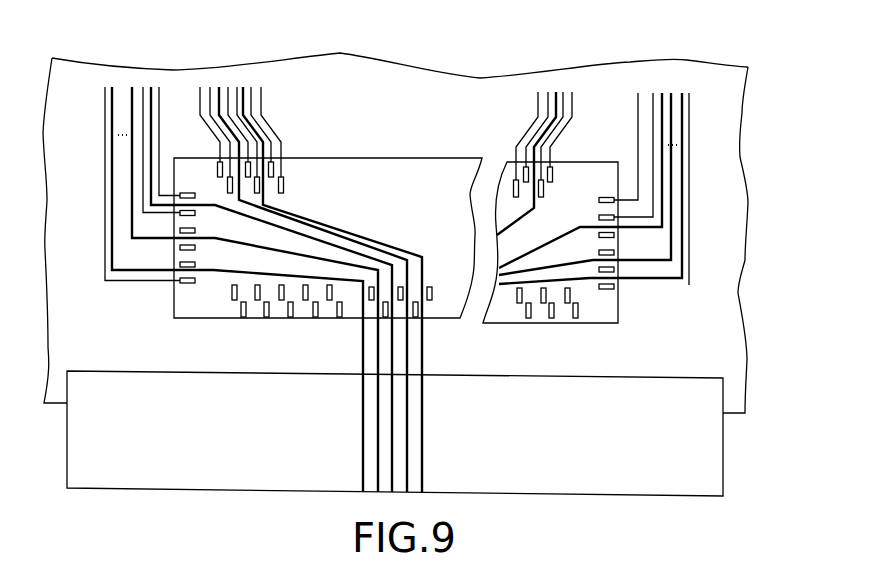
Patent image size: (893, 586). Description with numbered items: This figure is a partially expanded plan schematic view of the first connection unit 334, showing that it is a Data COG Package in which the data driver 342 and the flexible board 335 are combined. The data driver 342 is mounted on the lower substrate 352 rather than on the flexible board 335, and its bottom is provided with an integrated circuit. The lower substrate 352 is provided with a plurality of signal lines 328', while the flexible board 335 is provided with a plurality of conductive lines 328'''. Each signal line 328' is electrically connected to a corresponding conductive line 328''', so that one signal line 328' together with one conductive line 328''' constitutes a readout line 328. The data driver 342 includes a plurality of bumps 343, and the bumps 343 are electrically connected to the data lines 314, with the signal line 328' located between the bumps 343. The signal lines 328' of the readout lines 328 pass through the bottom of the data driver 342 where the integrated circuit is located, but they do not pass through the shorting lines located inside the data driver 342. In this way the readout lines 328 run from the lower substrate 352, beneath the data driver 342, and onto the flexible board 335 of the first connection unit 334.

The lower substrate 352 is at (60, 95).
The readout line 328 is at (293, 316).
The signal line 328' is at (269, 270).
The conductive line 328''' is at (315, 434).
The data line 314 is at (270, 126).
The bump 343 is at (281, 187).
The data driver 342 is at (603, 313).
The flexible board 335 is at (677, 403).
The first connection unit 334 is at (783, 278).